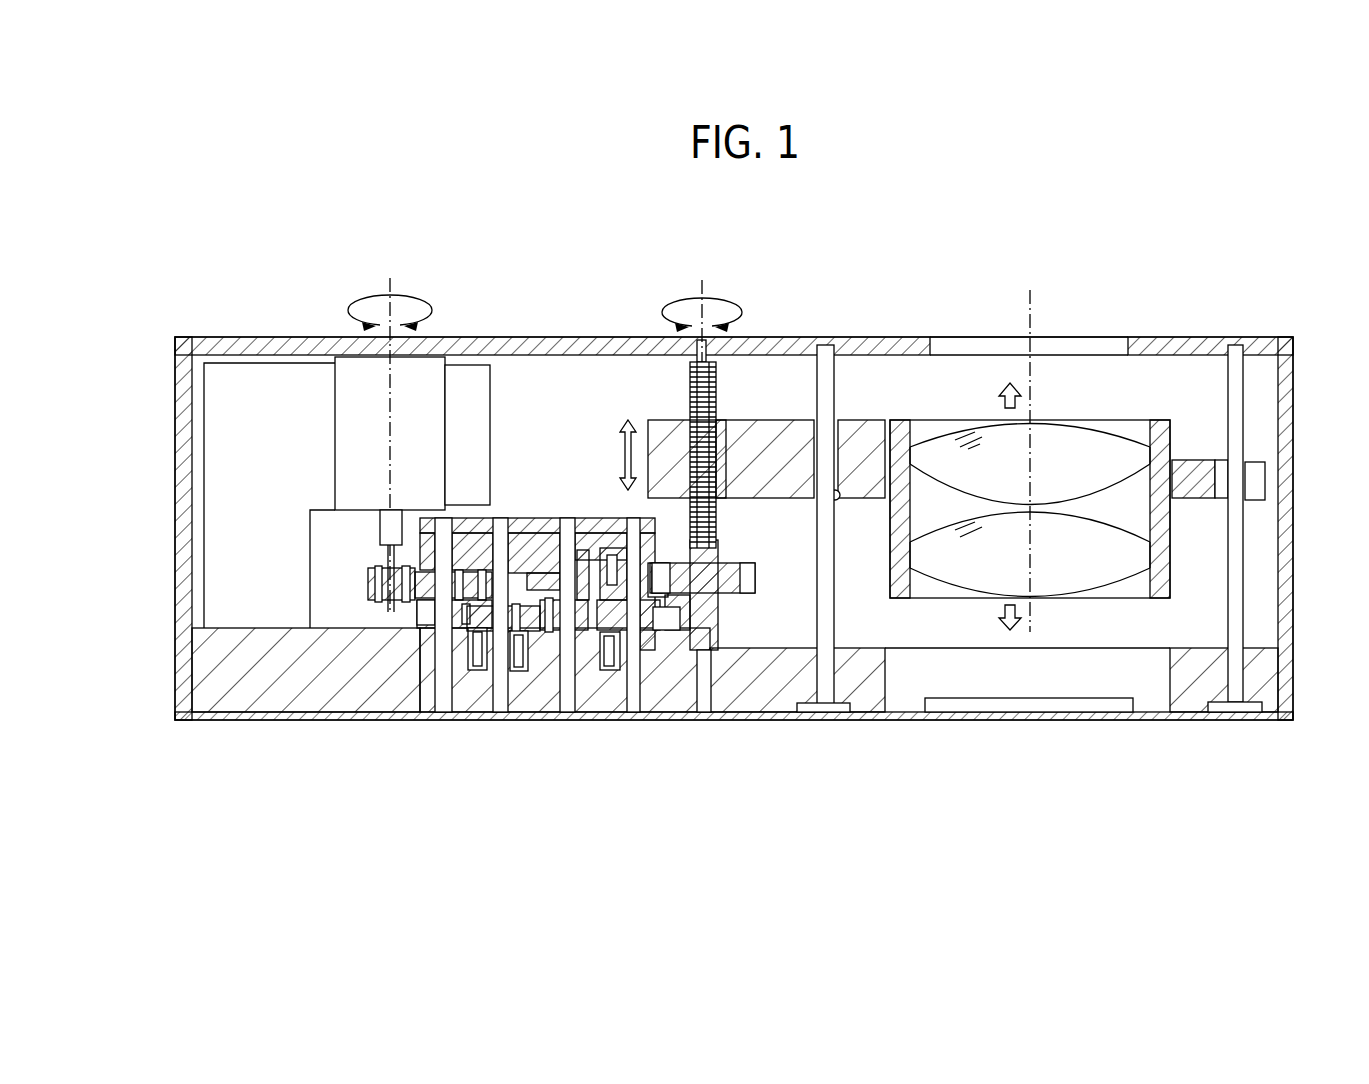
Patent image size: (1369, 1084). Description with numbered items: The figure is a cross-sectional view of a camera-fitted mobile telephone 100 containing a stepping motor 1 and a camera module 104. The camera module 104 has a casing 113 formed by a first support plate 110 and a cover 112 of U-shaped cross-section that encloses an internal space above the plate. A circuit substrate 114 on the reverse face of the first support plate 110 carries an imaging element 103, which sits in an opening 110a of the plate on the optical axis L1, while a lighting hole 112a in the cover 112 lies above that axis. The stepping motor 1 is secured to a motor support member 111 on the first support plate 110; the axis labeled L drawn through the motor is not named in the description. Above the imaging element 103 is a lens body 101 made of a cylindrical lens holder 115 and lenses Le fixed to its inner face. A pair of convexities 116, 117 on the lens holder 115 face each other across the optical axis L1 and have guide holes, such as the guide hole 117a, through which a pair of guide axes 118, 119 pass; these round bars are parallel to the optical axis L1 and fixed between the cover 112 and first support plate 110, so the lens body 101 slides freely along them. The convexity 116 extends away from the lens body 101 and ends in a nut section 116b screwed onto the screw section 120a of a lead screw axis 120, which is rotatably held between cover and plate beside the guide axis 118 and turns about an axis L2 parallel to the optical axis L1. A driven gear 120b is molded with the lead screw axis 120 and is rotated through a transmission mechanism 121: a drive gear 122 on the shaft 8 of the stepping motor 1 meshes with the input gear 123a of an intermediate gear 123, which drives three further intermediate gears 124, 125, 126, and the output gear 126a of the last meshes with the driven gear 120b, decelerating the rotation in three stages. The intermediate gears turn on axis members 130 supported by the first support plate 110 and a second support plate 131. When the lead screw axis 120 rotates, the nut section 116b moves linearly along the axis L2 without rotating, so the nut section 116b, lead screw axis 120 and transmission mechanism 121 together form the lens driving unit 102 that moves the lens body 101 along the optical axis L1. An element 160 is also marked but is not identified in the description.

The camera-fitted mobile telephone 100 is at (1242, 237).
The stepping motor 1 is at (450, 348).
The shaft 8 is at (385, 532).
The lens body 101 is at (1152, 420).
The lens driving unit 102 is at (622, 408).
The imaging element 103 is at (950, 706).
The camera module 104 is at (1290, 338).
The first support plate 110 is at (210, 652).
The opening 110a is at (1150, 712).
The motor support member 111 is at (215, 437).
The cover 112 is at (195, 600).
The lighting hole 112a is at (932, 345).
The casing 113 is at (100, 576).
The circuit substrate 114 is at (243, 716).
The lens holder 115 is at (898, 420).
The convexity 116 is at (857, 420).
The nut section 116b is at (718, 505).
The convexity 117 is at (1190, 458).
The guide hole 117a is at (1260, 494).
The guide axis 118 is at (826, 345).
The guide axis 119 is at (1238, 345).
The lead screw axis 120 is at (722, 377).
The screw section 120a is at (720, 405).
The driven gear 120b is at (752, 582).
The transmission mechanism 121 is at (526, 758).
The drive gear 122 is at (375, 592).
The intermediate gear 123 is at (441, 714).
The input gear 123a is at (386, 714).
The intermediate gear 124 is at (516, 714).
The intermediate gear 125 is at (553, 714).
The intermediate gear 126 is at (610, 714).
The output gear 126a is at (680, 714).
The axis member 130 is at (607, 518).
The second support plate 131 is at (610, 518).
The stopper 160 is at (840, 500).
The motor axis L is at (392, 278).
The optical axis L1 is at (1032, 290).
The axis L2 is at (702, 290).
The lens Le is at (1060, 430).